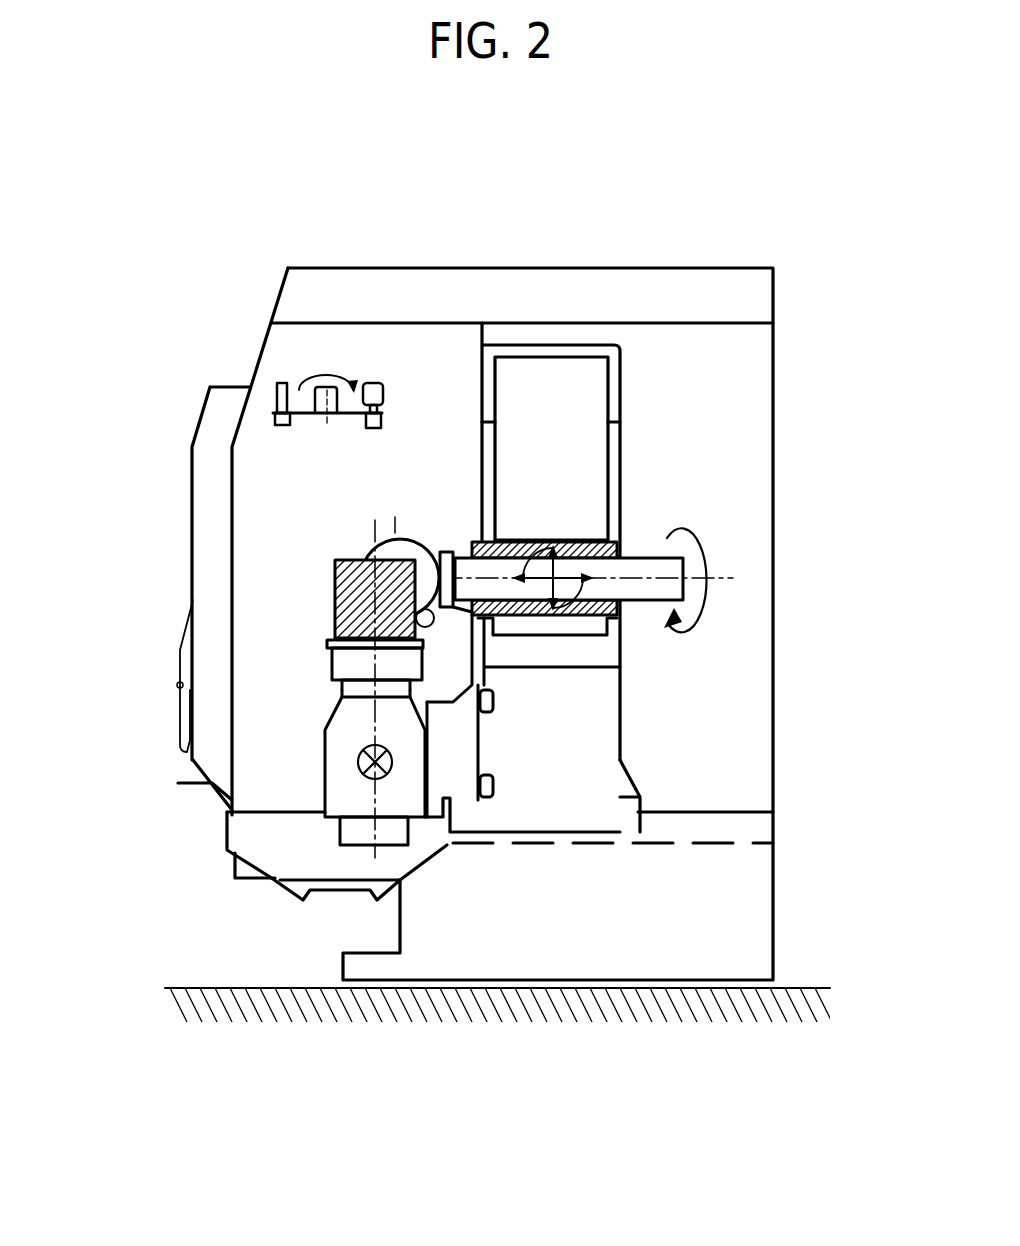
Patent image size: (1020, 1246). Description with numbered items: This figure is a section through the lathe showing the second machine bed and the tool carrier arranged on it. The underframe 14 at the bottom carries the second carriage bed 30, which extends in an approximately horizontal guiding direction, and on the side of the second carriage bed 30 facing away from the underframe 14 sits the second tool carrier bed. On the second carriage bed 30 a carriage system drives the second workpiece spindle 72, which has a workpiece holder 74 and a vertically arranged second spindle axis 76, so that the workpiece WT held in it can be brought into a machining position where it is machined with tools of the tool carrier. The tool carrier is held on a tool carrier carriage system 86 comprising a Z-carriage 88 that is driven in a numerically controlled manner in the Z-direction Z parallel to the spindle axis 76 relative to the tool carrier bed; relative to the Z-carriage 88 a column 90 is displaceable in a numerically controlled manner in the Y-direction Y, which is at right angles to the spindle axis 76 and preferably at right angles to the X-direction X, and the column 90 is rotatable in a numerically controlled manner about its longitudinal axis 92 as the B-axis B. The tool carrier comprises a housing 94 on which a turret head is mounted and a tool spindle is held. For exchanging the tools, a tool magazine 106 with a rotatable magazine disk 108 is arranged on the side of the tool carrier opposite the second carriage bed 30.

The underframe 14 is at (697, 928).
The second carriage bed 30 is at (548, 798).
The second workpiece spindle 72 is at (330, 770).
The workpiece holder 74 is at (345, 663).
The second spindle axis 76 is at (370, 798).
The tool carrier carriage system 86 is at (541, 518).
The Z-carriage 88 is at (580, 540).
The column 90 is at (620, 655).
The longitudinal axis 92 is at (727, 580).
The housing 94 is at (437, 550).
The tool magazine 106 is at (317, 368).
The rotatable magazine disk 108 is at (305, 415).
The workpiece WT is at (335, 590).
The X-direction X is at (362, 752).
The Y-direction Y is at (605, 612).
The Z-direction Z is at (515, 540).
The B-axis B is at (625, 605).